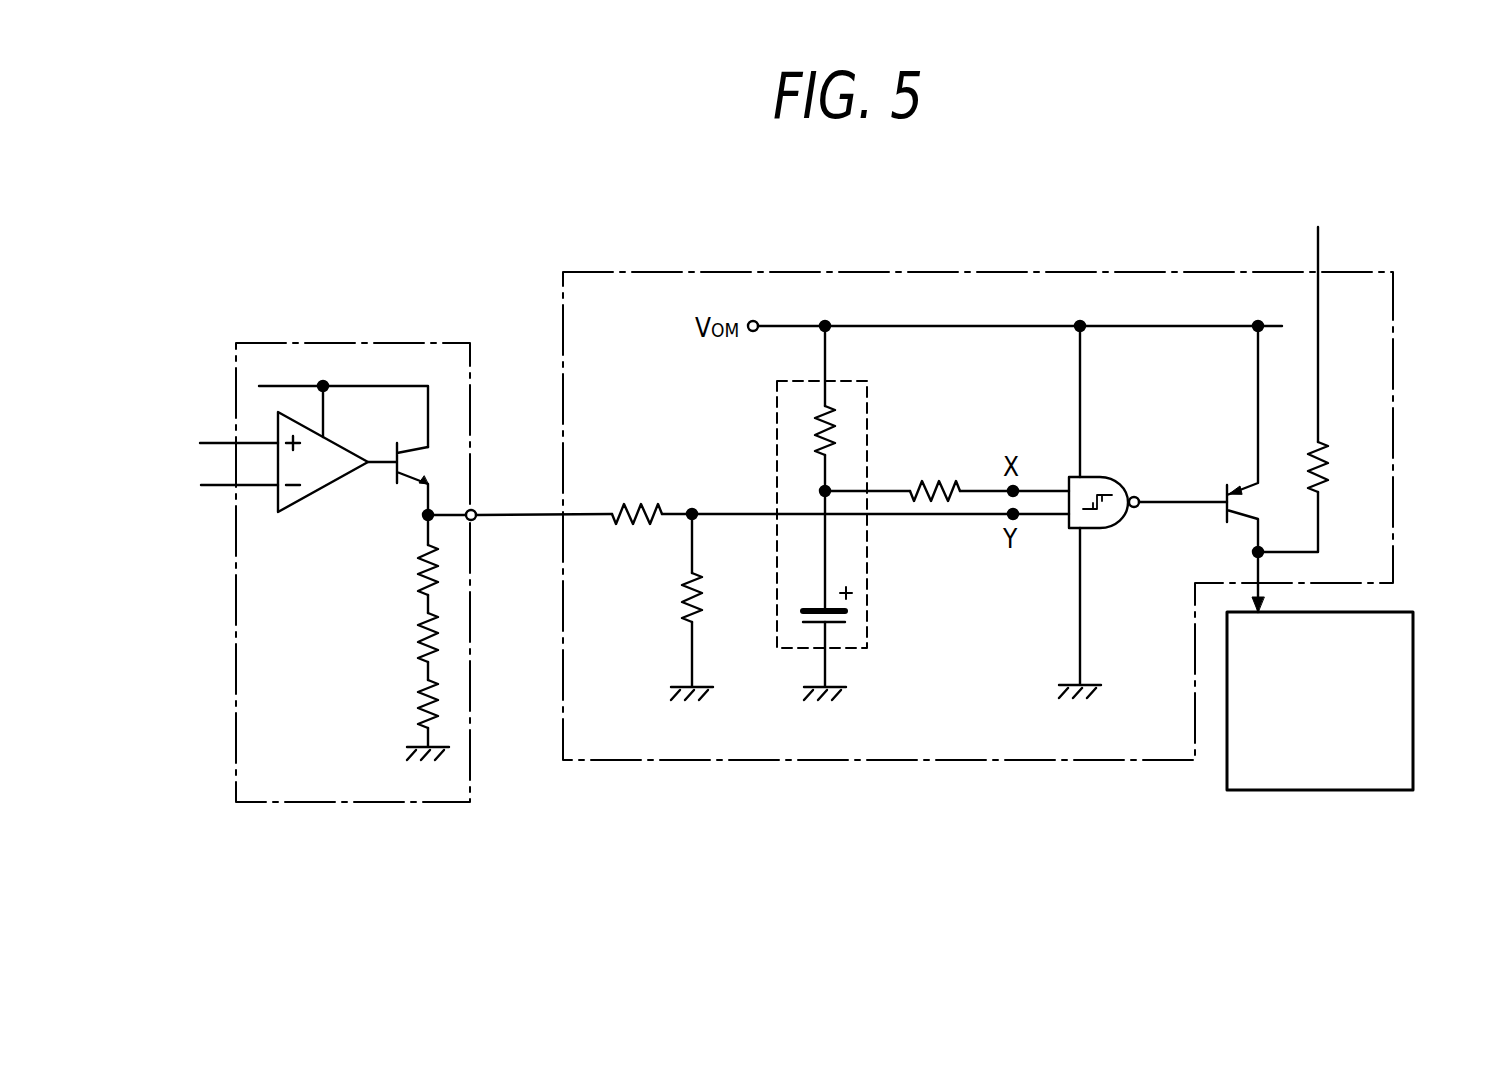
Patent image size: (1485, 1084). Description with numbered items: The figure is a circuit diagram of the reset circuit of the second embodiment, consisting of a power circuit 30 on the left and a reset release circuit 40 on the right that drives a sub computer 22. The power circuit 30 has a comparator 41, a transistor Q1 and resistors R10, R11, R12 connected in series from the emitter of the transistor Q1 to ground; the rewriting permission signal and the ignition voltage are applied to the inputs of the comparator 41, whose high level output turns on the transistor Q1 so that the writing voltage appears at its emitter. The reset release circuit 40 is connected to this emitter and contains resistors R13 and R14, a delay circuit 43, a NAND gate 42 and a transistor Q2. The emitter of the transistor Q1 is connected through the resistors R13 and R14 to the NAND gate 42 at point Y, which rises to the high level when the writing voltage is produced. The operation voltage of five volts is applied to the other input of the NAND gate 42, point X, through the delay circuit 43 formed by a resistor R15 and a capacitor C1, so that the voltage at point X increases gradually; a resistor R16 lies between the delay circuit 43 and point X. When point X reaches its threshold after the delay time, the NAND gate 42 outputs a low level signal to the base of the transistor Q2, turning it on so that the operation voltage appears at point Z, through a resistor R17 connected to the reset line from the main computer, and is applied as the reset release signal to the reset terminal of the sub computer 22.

The sub computer 22 is at (1413, 642).
The power circuit 30 is at (345, 343).
The reset release circuit 40 is at (985, 270).
The comparator 41 is at (323, 508).
The NAND gate 42 is at (1118, 478).
The delay circuit 43 is at (858, 381).
The transistor Q1 is at (412, 497).
The transistor Q2 is at (1238, 525).
The resistor R10 is at (418, 573).
The resistor R11 is at (418, 641).
The resistor R12 is at (418, 708).
The resistor R13 is at (622, 506).
The resistor R14 is at (684, 589).
The resistor R15 is at (818, 428).
The resistor R16 is at (931, 485).
The resistor R17 is at (1335, 452).
The capacitor C1 is at (811, 610).